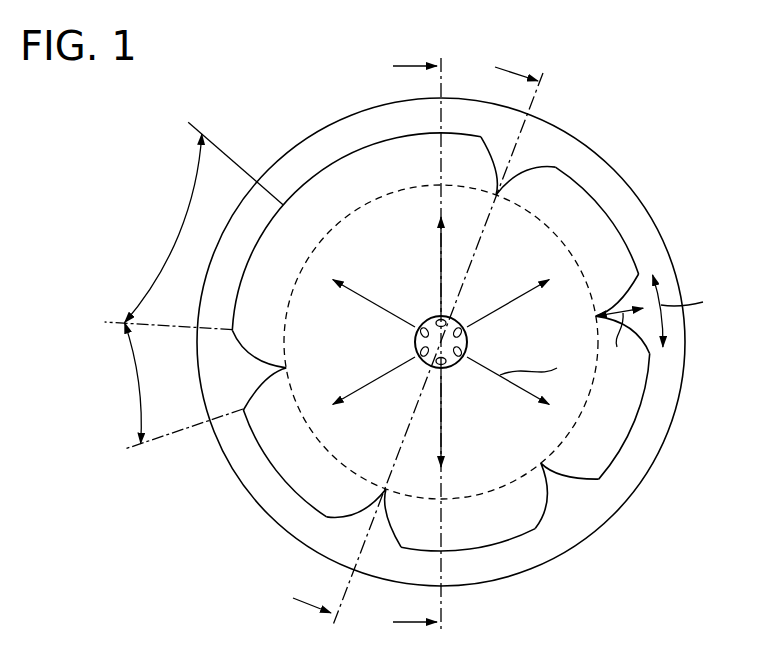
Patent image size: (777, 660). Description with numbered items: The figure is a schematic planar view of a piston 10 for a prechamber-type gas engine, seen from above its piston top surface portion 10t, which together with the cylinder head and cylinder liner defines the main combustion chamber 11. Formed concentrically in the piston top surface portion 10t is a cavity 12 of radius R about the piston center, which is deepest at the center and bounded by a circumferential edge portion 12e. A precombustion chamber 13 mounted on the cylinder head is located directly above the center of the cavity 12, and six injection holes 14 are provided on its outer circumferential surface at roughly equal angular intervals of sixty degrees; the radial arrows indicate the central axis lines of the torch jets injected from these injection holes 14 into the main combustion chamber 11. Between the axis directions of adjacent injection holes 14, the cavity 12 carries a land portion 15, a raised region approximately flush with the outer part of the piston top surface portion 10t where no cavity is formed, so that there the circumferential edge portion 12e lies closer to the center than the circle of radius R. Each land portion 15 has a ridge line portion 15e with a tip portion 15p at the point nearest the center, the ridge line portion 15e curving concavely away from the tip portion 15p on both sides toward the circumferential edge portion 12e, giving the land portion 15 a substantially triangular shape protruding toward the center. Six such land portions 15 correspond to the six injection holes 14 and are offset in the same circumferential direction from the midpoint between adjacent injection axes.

The piston 10 is at (423, 345).
The piston top surface portion 10t is at (660, 455).
The main combustion chamber 11 is at (480, 339).
The cavity 12 is at (580, 218).
The circumferential edge portion 12e is at (627, 237).
The precombustion chamber 13 is at (413, 343).
The injection hole 14 is at (427, 320).
The land portion 15 is at (420, 361).
The ridge line portion 15e is at (570, 477).
The tip portion 15p is at (541, 463).